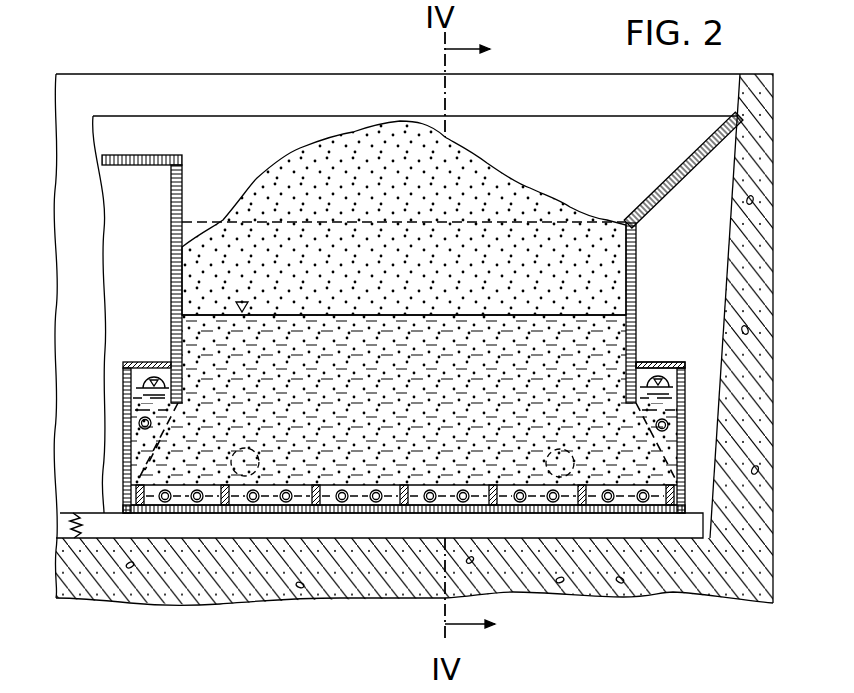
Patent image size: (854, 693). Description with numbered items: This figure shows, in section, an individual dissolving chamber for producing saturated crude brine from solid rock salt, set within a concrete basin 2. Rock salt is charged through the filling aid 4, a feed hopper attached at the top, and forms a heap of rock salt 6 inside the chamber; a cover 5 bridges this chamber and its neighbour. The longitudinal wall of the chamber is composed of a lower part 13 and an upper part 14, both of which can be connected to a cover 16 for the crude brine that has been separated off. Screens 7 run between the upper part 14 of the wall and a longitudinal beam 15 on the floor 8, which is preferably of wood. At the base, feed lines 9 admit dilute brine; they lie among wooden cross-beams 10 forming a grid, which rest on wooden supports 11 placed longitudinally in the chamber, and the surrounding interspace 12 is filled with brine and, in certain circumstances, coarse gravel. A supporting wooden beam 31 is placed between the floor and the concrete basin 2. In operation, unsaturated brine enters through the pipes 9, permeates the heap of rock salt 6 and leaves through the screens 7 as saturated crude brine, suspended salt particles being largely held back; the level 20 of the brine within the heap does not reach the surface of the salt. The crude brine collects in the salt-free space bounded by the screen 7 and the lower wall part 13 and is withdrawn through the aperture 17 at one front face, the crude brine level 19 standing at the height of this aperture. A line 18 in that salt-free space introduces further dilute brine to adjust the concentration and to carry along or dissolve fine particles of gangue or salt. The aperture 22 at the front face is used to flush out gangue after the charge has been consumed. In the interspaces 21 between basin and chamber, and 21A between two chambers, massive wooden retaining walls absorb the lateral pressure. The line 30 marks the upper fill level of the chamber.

The basin 2 is at (773, 545).
The filling aid 4 is at (680, 186).
The cover 5 is at (139, 155).
The heap of rock salt 6 is at (530, 188).
The screens 7 is at (165, 447).
The floor 8 is at (345, 514).
The feed lines for dilute brine 9 is at (197, 503).
The cross-beams 10 is at (335, 483).
The wooden supports 11 is at (491, 483).
The interspace 12 is at (270, 506).
The lower part of longitudinal wall 13 is at (122, 391).
The upper part of longitudinal wall 14 is at (171, 285).
The longitudinal beam 15 is at (150, 470).
The cover for crude brine 16 is at (672, 361).
The aperture for removing crude brine 17 is at (154, 377).
The line for introduction of dilute brine 18 is at (138, 426).
The level of crude brine 19 is at (658, 376).
The level of brine in heap 20 is at (320, 313).
The interspace between basin and chamber 21 is at (665, 279).
The interspace between two dissolving chambers 21A is at (112, 243).
The aperture for flushing gangue 22 is at (252, 449).
The fill level line 30 is at (196, 230).
The supporting wooden beam 31 is at (80, 513).